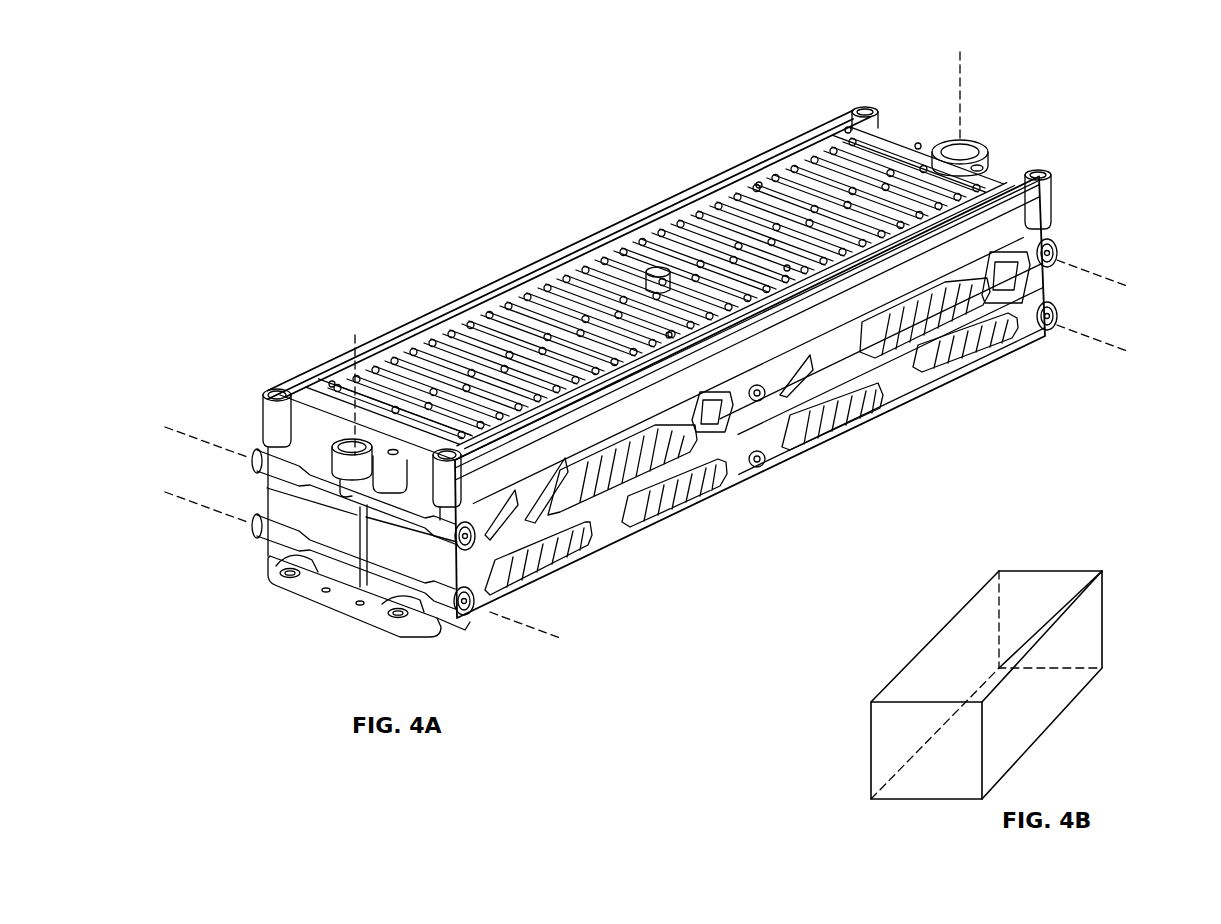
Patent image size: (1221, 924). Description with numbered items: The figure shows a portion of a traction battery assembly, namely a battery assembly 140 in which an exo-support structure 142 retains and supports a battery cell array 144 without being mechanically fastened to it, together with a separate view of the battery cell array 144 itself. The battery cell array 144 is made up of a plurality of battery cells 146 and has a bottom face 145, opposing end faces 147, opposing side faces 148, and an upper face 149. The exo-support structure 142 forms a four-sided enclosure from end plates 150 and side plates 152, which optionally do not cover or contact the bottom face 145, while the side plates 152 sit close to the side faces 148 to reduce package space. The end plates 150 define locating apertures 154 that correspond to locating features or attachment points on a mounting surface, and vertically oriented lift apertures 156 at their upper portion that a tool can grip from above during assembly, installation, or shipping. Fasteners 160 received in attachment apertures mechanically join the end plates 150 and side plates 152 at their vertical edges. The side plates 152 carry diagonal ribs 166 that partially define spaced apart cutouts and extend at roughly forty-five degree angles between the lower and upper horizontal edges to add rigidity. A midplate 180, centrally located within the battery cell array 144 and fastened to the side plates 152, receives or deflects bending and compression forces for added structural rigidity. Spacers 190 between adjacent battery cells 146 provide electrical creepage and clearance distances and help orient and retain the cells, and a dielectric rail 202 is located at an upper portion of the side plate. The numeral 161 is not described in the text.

In FIG. 4A, the battery assembly 140 is at (683, 101).
In FIG. 4A, the exo-support structure 142 is at (388, 336).
In FIG. 4A, the battery cell array 144 is at (787, 267).
In FIG. 4B, the battery cell array 144 is at (1062, 547).
In FIG. 4B, the bottom face 145 is at (1020, 732).
In FIG. 4A, the battery cells 146 is at (520, 297).
In FIG. 4B, the end faces 147 is at (1053, 583).
In FIG. 4B, the side faces 148 is at (1088, 625).
In FIG. 4B, the upper face 149 is at (980, 622).
In FIG. 4A, the end plates 150 is at (917, 145).
In FIG. 4A, the side plates 152 is at (688, 192).
In FIG. 4A, the locating apertures 154 is at (362, 605).
In FIG. 4A, the lift apertures 156 is at (960, 140).
In FIG. 4A, the fasteners 160 is at (1060, 317).
In FIG. 4A, the post 161 is at (865, 108).
In FIG. 4A, the diagonal ribs 166 is at (1000, 352).
In FIG. 4A, the midplate 180 is at (615, 270).
In FIG. 4A, the spacers 190 is at (460, 437).
In FIG. 4A, the dielectric rail 202 is at (758, 183).